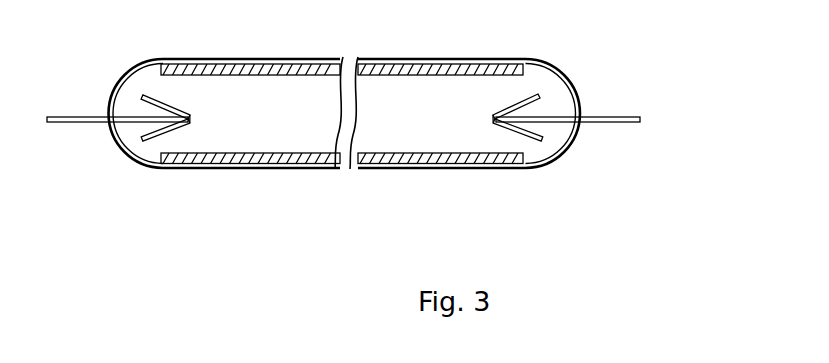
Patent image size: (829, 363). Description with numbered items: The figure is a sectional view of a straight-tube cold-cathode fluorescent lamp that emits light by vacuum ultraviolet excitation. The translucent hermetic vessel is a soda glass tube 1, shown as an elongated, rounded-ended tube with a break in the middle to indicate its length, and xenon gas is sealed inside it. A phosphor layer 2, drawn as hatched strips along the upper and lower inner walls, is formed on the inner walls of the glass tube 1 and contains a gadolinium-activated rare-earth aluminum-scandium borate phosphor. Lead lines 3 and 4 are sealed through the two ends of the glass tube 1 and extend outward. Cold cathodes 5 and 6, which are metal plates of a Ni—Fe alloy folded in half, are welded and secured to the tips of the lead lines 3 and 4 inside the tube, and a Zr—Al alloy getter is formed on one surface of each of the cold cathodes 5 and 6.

The soda glass tube 1 is at (559, 69).
The phosphor layer 2 is at (398, 73).
The lead line 3 is at (65, 123).
The lead line 4 is at (612, 117).
The cold cathode 5 is at (144, 140).
The cold cathode 6 is at (523, 138).